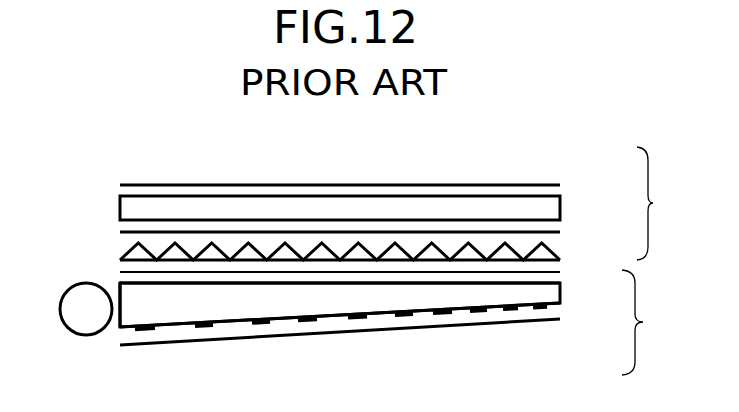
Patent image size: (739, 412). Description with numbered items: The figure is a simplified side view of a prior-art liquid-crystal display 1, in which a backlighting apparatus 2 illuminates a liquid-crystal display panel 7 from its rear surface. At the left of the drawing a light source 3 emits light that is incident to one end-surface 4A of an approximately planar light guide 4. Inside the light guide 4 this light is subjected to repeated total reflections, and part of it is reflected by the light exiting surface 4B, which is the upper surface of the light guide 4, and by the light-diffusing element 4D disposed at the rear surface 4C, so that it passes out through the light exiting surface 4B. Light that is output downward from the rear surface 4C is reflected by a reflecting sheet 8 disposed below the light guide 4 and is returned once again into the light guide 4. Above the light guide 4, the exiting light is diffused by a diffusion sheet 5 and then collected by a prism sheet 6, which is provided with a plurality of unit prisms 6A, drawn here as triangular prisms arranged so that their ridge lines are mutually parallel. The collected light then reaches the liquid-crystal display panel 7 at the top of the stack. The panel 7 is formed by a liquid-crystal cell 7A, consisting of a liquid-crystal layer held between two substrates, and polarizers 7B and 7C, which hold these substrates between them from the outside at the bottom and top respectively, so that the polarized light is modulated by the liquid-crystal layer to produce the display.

The liquid-crystal display 1 is at (121, 168).
The backlighting apparatus 2 is at (344, 328).
The light source 3 is at (83, 329).
The light guide 4 is at (552, 292).
The end-surface 4A is at (122, 310).
The light exiting surface 4B is at (120, 283).
The rear surface 4C is at (375, 313).
The light-diffusing element 4D is at (207, 328).
The diffusion sheet 5 is at (120, 272).
The prism sheet 6 is at (338, 245).
The unit prisms 6A is at (120, 259).
The liquid-crystal display panel 7 is at (399, 203).
The liquid-crystal cell 7A is at (560, 210).
The polarizer 7B is at (550, 232).
The polarizer 7C is at (538, 185).
The reflecting sheet 8 is at (540, 322).